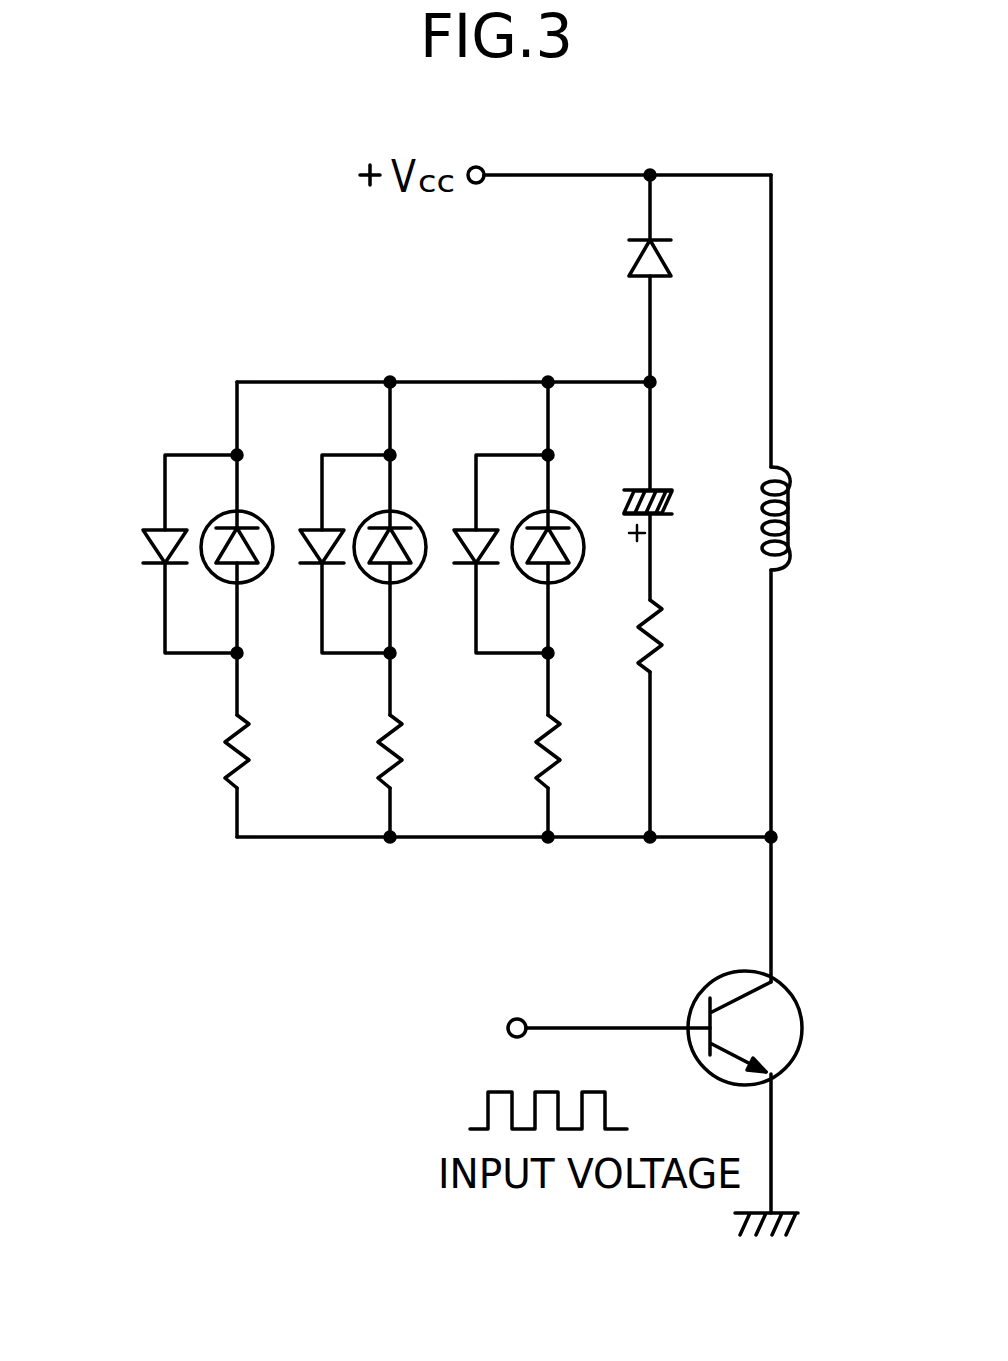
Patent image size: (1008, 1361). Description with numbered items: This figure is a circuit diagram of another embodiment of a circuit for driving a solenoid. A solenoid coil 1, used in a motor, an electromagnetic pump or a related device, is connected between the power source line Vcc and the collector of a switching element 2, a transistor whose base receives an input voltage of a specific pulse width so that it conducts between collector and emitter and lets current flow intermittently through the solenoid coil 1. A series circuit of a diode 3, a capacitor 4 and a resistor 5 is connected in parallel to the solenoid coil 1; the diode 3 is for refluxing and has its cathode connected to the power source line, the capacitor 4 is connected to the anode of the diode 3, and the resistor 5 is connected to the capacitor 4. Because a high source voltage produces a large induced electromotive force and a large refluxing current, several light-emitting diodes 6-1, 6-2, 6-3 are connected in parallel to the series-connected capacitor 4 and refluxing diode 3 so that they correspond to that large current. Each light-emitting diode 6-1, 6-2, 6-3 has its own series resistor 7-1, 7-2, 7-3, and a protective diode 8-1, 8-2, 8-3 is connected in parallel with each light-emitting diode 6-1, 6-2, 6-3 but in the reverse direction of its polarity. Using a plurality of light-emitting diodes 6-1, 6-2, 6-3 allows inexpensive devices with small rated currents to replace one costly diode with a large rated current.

The solenoid coil 1 is at (790, 498).
The switching element 2 is at (722, 973).
The diode 3 is at (628, 262).
The capacitor 4 is at (640, 489).
The resistor 5 is at (662, 617).
The light-emitting diode 6-1 is at (537, 536).
The light-emitting diode 6-2 is at (379, 536).
The light-emitting diode 6-3 is at (226, 536).
The resistor 7-1 is at (561, 744).
The resistor 7-2 is at (404, 744).
The resistor 7-3 is at (250, 744).
The protective diode 8-1 is at (472, 527).
The protective diode 8-2 is at (313, 527).
The protective diode 8-3 is at (157, 527).